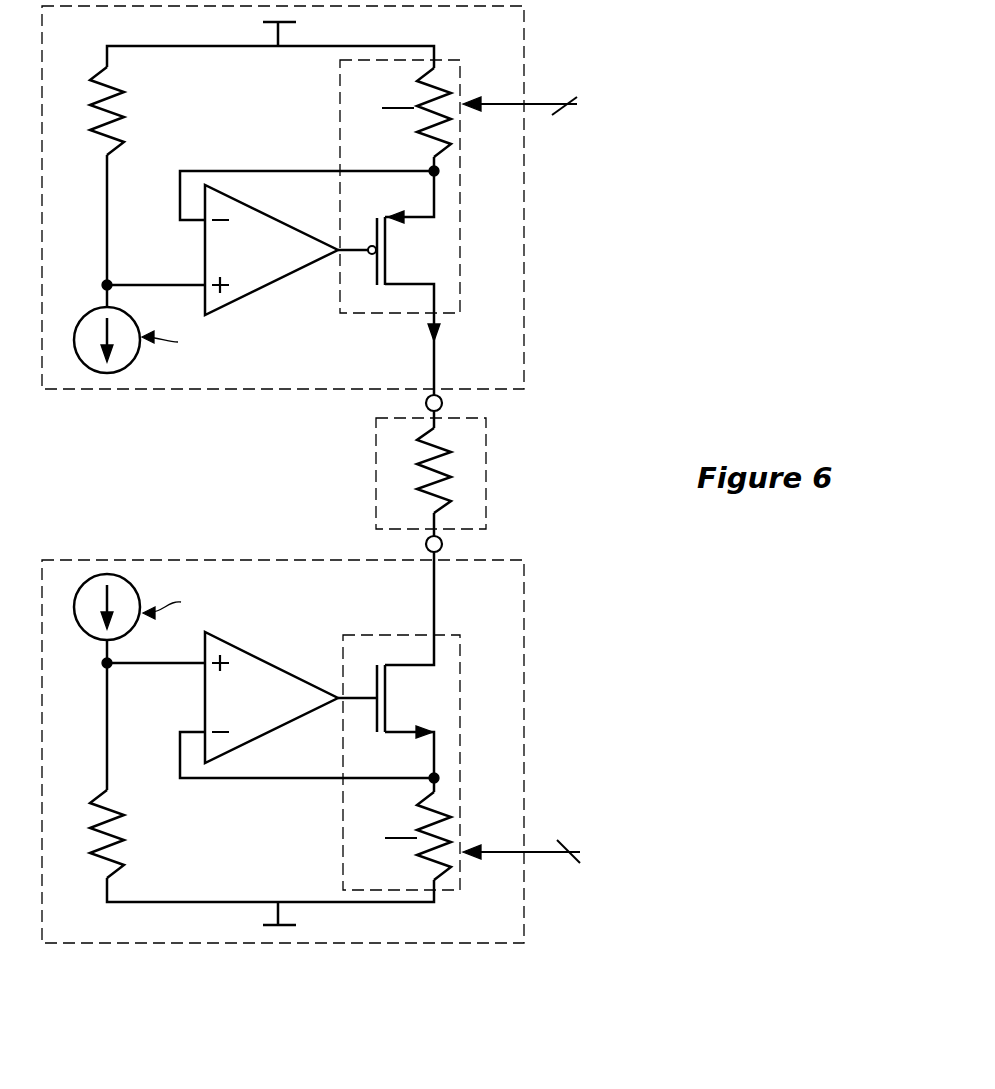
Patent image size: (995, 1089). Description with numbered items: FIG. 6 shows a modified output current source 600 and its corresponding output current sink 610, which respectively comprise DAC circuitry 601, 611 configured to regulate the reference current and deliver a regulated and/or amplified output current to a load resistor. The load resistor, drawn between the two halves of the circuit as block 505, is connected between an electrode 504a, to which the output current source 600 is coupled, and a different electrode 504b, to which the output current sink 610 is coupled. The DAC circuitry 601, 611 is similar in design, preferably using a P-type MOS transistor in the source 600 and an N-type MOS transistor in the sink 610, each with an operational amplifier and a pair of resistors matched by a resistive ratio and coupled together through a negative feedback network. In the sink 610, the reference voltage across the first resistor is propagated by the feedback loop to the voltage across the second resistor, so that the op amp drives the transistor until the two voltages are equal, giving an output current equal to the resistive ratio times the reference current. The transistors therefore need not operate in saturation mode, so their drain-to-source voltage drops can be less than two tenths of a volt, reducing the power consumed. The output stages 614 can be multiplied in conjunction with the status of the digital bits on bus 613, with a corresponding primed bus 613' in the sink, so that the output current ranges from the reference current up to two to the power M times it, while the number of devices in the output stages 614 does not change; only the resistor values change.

The output current source 600 is at (555, 187).
The DAC circuitry 601 is at (284, 300).
The output stages 614 is at (340, 94).
The bus 613 is at (587, 84).
The electrode 504a is at (442, 405).
The load resistor R 505 is at (364, 483).
The electrode 504b is at (442, 547).
The output current sink 610 is at (560, 759).
The DAC circuitry 611 is at (284, 648).
The control bits Bits' 1:M 613' is at (591, 874).